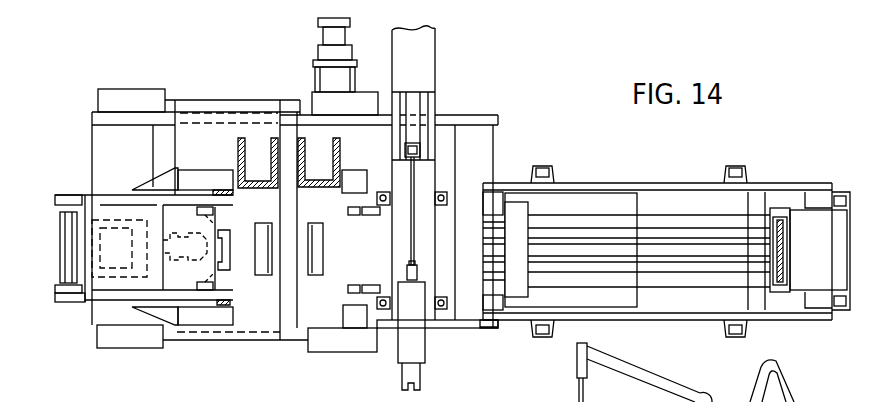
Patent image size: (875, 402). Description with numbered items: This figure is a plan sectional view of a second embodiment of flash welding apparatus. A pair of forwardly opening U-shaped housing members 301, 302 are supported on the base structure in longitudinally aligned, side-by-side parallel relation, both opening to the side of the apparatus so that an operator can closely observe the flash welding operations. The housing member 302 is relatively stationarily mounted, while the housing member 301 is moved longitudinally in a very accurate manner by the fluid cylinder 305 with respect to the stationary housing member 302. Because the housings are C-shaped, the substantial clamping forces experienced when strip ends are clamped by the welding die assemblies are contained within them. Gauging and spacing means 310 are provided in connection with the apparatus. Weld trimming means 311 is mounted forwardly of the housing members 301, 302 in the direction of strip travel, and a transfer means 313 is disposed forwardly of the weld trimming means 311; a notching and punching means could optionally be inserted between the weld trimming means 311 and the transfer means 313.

The U-shaped housing member 301 is at (240, 155).
The U-shaped housing member 302 is at (347, 140).
The fluid cylinder 305 is at (120, 238).
The gauging and spacing means 310 is at (685, 372).
The weld trimming means 311 is at (470, 152).
The transfer means 313 is at (665, 178).